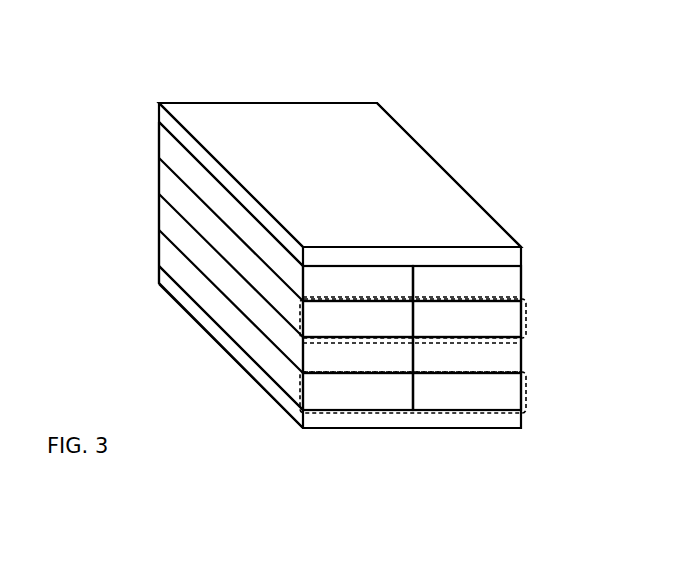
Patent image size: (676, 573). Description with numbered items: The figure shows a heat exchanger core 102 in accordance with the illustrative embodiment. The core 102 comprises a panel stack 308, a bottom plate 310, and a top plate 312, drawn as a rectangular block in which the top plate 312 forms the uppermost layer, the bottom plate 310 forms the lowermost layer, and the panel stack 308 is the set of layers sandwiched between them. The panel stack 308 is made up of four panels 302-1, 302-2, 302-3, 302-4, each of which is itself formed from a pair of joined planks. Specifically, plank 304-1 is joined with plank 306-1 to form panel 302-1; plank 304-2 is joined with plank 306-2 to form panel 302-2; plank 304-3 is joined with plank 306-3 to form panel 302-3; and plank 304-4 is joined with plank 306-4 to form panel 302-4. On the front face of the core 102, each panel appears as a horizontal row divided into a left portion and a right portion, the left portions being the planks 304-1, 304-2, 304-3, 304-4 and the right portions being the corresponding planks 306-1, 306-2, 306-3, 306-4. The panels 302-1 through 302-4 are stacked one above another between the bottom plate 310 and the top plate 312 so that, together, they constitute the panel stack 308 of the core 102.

The core 102 is at (202, 58).
The panel 302-1 is at (526, 392).
The panel 302-2 is at (540, 357).
The panel 302-3 is at (526, 318).
The panel 302-4 is at (540, 272).
The plank 304-1 is at (380, 404).
The plank 304-2 is at (380, 367).
The plank 304-3 is at (380, 331).
The plank 304-4 is at (380, 295).
The plank 306-1 is at (488, 404).
The plank 306-2 is at (488, 367).
The plank 306-3 is at (488, 331).
The plank 306-4 is at (488, 295).
The panel stack 308 is at (153, 123).
The bottom plate 310 is at (213, 327).
The top plate 312 is at (338, 166).